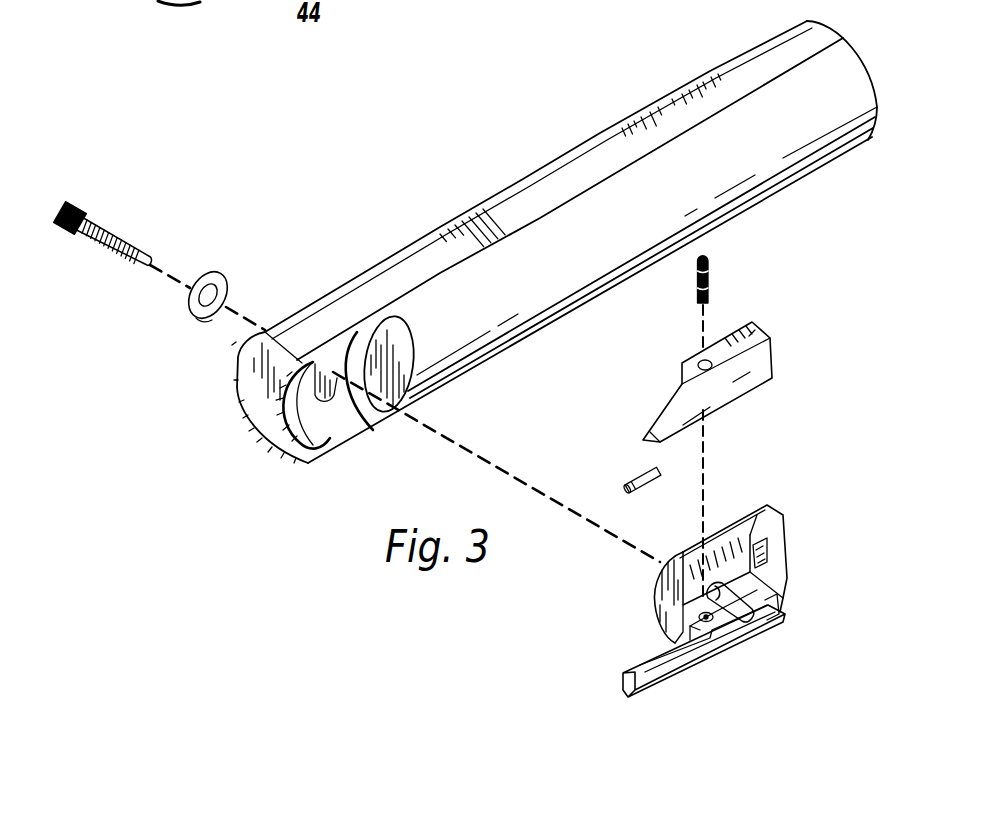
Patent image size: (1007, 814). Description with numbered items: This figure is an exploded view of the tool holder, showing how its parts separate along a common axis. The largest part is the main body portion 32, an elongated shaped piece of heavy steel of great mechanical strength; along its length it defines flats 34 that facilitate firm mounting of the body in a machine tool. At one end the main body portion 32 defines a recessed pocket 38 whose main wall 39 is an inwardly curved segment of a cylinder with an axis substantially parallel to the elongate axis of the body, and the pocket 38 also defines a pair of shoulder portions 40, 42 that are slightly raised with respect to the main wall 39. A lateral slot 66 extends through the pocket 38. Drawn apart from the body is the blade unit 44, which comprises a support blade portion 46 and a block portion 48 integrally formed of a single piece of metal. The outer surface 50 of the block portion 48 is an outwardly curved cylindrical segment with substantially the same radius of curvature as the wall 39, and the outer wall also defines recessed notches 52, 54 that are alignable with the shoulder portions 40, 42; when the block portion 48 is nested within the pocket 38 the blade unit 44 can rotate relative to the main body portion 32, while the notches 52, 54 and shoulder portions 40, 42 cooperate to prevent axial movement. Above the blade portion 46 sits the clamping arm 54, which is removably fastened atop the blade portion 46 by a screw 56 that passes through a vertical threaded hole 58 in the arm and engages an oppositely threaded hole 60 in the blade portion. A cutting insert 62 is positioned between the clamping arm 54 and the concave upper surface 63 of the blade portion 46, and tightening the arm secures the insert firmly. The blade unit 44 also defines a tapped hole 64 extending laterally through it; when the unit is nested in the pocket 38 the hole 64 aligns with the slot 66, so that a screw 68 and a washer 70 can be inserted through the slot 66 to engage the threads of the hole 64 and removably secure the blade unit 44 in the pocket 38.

The main body portion 32 is at (547, 254).
The flats 34 is at (810, 40).
The recessed pocket 38 is at (327, 425).
The main wall 39 is at (375, 435).
The shoulder portion 40 is at (305, 460).
The shoulder portion 42 is at (385, 424).
The blade unit 44 is at (708, 597).
The support blade portion 46 is at (688, 650).
The block portion 48 is at (722, 547).
The outer surface 50 is at (706, 522).
The recessed notch 52 is at (711, 560).
The clamping arm 54 is at (705, 436).
The screw 56 is at (736, 288).
The vertical threaded hole 58 is at (700, 360).
The oppositely threaded hole 60 is at (668, 615).
The cutting insert 62 is at (628, 478).
The upper surface concave 63 is at (645, 665).
The tapped hole 64 is at (753, 652).
The lateral slot 66 is at (255, 416).
The screw 68 is at (57, 197).
The washer 70 is at (211, 270).